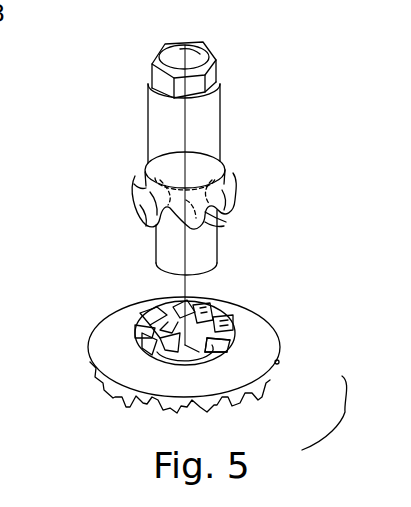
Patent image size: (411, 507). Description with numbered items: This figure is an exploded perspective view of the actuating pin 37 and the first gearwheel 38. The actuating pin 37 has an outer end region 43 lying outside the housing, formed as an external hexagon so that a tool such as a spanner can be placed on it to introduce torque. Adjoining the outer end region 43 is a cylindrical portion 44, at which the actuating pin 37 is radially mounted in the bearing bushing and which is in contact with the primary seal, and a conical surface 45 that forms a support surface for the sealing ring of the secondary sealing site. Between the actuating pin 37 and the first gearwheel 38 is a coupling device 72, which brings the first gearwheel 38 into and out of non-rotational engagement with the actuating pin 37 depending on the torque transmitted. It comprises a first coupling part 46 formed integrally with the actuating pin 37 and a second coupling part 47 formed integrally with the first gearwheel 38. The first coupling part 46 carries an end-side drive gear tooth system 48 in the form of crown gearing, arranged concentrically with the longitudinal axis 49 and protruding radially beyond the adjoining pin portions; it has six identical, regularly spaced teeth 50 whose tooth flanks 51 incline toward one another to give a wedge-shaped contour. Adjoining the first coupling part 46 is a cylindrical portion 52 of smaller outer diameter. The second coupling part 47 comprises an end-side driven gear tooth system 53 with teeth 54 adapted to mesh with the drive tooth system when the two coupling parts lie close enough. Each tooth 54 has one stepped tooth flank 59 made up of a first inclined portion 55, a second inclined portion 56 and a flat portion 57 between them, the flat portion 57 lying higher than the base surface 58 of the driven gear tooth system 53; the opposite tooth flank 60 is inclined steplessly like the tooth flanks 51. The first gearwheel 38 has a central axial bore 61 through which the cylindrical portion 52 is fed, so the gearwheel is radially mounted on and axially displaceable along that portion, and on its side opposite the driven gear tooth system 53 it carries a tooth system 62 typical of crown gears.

The actuating pin 37 is at (217, 138).
The first gearwheel 38 is at (203, 372).
The outer end region 43 is at (193, 80).
The cylindrical portion 44 is at (203, 140).
The conical surface 45 is at (227, 175).
The first coupling part 46 is at (230, 196).
The second coupling part 47 is at (212, 352).
The drive gear tooth system 48 is at (225, 227).
The longitudinal axis 49 is at (165, 128).
The teeth 50 is at (214, 224).
The tooth flanks 51 is at (150, 237).
The cylindrical portion 52 is at (200, 247).
The driven gear tooth system 53 is at (155, 331).
The teeth 54 is at (232, 338).
The first inclined portion 55 is at (207, 352).
The second inclined portion 56 is at (207, 340).
The flat portion 57 is at (205, 348).
The base surface 58 is at (200, 352).
The stepped tooth flank 59 is at (339, 413).
The tooth flank 60 is at (165, 345).
The central axial bore 61 is at (145, 330).
The tooth system 62 is at (145, 400).
The coupling device 72 is at (64, 207).